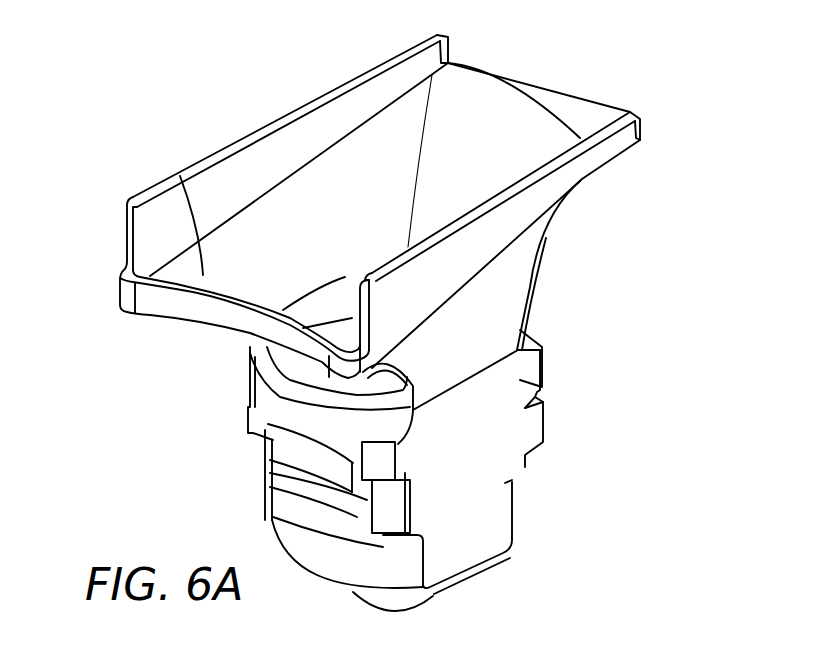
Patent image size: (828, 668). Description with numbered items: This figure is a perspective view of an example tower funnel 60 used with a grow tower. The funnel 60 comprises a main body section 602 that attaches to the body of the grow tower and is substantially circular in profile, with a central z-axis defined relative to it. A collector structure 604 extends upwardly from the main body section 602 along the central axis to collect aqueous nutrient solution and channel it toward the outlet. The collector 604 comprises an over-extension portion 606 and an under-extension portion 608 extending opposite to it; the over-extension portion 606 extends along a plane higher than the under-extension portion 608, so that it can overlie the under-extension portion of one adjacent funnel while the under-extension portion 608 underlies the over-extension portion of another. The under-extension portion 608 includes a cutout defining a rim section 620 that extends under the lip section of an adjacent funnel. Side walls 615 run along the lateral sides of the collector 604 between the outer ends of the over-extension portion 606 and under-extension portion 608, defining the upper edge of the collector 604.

The funnel 60 is at (153, 422).
The main body section 602 is at (493, 463).
The collector structure 604 is at (577, 178).
The over-extension portion 606 is at (519, 95).
The under-extension portion 608 is at (197, 220).
The side walls 615 is at (257, 153).
The rim section 620 is at (223, 300).